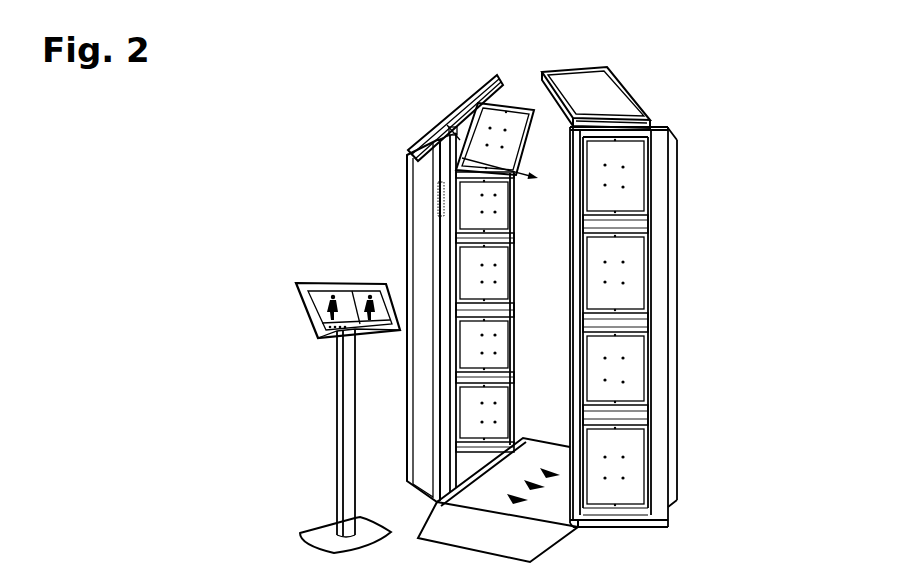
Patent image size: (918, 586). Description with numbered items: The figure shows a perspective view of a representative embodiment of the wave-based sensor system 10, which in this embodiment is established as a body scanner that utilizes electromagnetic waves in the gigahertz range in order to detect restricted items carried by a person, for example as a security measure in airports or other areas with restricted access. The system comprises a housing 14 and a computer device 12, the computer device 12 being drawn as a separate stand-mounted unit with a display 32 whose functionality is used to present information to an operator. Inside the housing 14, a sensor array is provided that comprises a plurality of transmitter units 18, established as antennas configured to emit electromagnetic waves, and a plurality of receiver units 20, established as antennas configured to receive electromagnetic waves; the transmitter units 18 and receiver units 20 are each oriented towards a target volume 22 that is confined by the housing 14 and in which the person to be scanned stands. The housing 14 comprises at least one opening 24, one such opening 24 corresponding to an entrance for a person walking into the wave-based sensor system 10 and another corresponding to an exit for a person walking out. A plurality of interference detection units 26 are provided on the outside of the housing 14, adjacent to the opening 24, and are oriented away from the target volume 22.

The wave-based sensor system 10 is at (356, 150).
The computer device 12 is at (283, 303).
The housing 14 is at (618, 97).
The transmitter units 18 is at (478, 222).
The receiver units 20 is at (478, 289).
The target volume 22 is at (539, 393).
The opening 24 is at (447, 125).
The interference detection units 26 is at (625, 193).
The display 32 is at (320, 343).